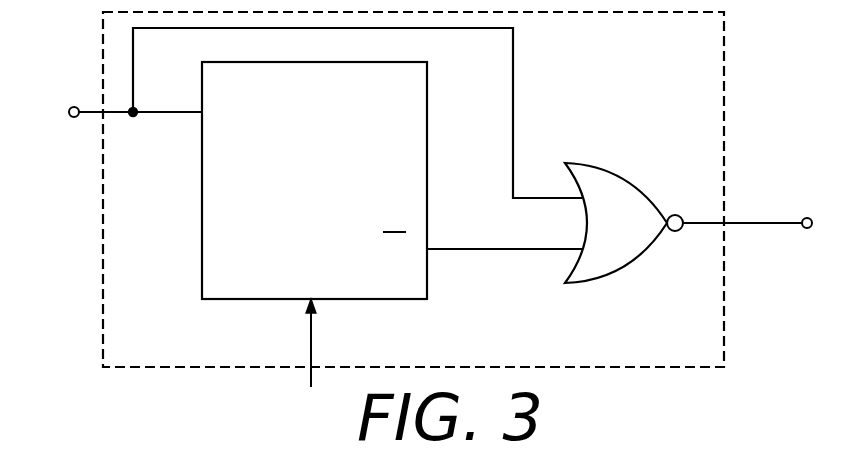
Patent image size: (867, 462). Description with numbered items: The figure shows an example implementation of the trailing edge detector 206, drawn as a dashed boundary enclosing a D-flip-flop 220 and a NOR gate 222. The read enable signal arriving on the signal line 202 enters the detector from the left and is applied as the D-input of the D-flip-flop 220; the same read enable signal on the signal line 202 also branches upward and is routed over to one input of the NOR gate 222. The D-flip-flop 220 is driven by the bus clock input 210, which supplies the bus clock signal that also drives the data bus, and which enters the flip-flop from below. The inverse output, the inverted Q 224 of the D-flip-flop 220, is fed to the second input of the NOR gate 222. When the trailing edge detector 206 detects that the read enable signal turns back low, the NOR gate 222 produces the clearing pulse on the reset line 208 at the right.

The signal line 202 is at (72, 108).
The trailing edge detector 206 is at (724, 35).
The reset line 208 is at (812, 218).
The bus clock input 210 is at (313, 342).
The D-flip-flop 220 is at (215, 198).
The NOR gate 222 is at (637, 205).
The inverted Q 224 is at (490, 250).